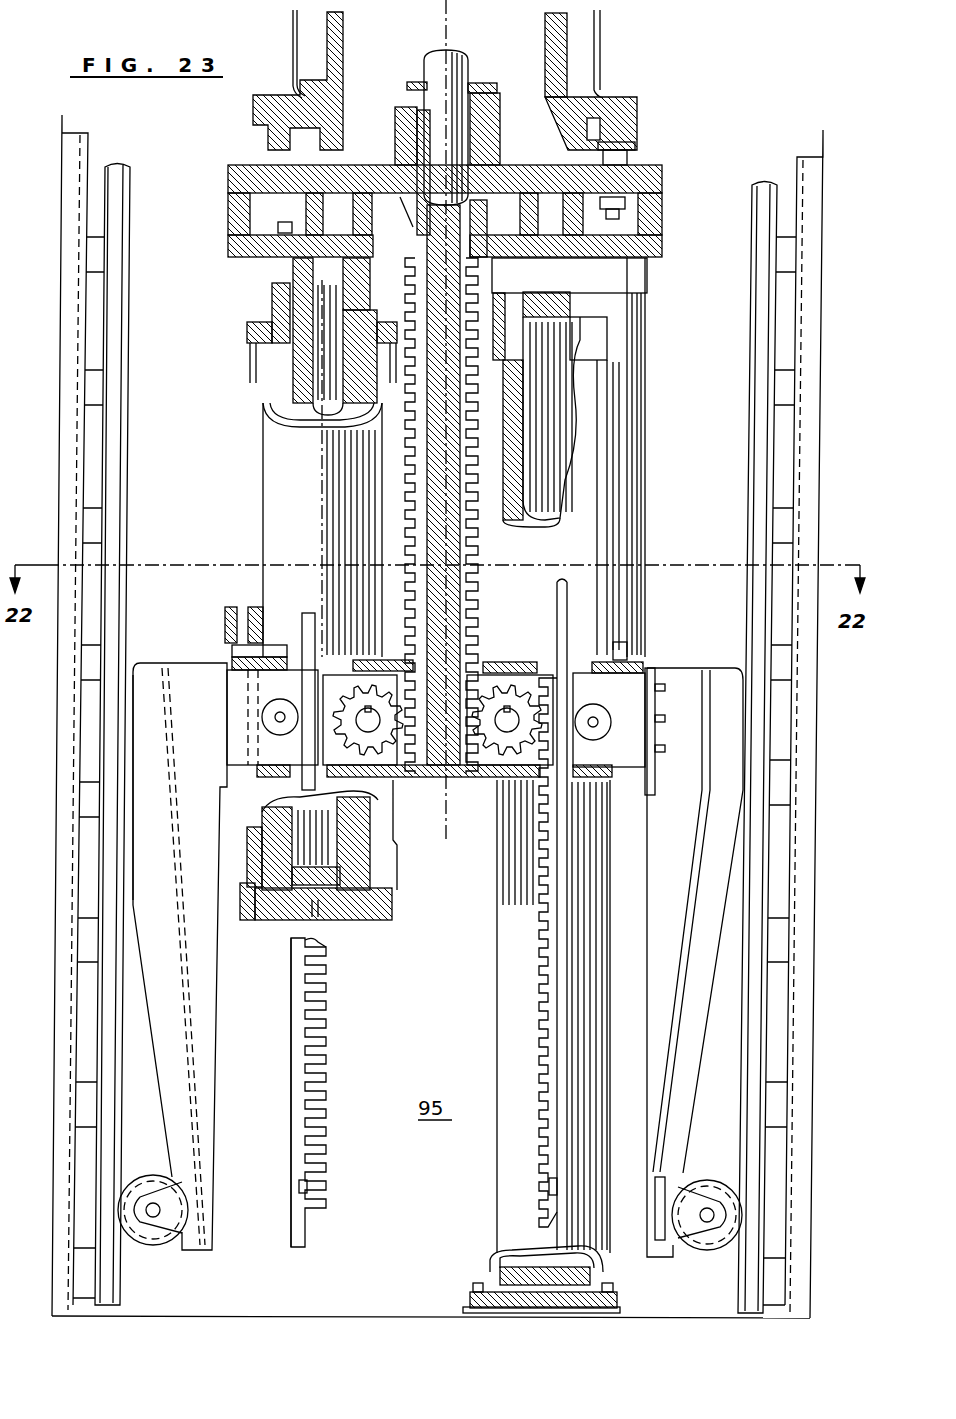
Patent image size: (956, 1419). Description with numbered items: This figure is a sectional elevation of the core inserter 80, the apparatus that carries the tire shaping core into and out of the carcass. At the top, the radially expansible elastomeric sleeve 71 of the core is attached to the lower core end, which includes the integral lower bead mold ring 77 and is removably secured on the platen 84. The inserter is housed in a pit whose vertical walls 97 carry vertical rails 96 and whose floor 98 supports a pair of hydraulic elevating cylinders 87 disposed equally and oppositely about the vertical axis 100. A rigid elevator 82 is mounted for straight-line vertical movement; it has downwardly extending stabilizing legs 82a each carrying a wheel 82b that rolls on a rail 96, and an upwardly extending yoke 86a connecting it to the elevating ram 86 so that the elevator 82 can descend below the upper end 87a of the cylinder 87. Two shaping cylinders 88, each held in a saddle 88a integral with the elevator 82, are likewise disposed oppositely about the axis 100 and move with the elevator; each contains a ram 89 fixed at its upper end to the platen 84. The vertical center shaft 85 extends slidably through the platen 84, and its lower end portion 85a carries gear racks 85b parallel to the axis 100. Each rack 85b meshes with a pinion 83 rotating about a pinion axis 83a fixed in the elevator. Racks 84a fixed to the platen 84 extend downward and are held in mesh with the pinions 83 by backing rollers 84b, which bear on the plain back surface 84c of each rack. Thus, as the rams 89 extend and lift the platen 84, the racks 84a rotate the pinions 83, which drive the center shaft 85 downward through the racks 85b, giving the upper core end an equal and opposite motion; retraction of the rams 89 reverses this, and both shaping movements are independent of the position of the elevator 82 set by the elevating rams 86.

The radially expansible elastomeric sleeve 71 is at (600, 36).
The lower bead mold ring 77 is at (620, 100).
The core inserter 80 is at (683, 215).
The elevator 82 is at (180, 660).
The stabilizing legs 82a is at (148, 703).
The wheel 82b is at (148, 1233).
The pinion 83 is at (357, 708).
The pinion axis 83a is at (500, 723).
The platen 84 is at (236, 178).
The racks 84a is at (232, 242).
The backing roller 84b is at (265, 722).
The plain back surface 84c is at (570, 849).
The center shaft 85 is at (462, 52).
The lower end portion 85a is at (435, 513).
The gear racks 85b is at (462, 485).
The elevating ram 86 is at (525, 423).
The yoke 86a is at (643, 303).
The elevating cylinder 87 is at (597, 520).
The upper end 87a is at (595, 345).
The shaping cylinders 88 is at (263, 465).
The saddle 88a is at (255, 607).
The ram 89 is at (290, 388).
The vertical rail 96 is at (122, 1088).
The vertical wall 97 is at (60, 886).
The floor 98 is at (352, 1316).
The vertical axis 100 is at (446, 10).